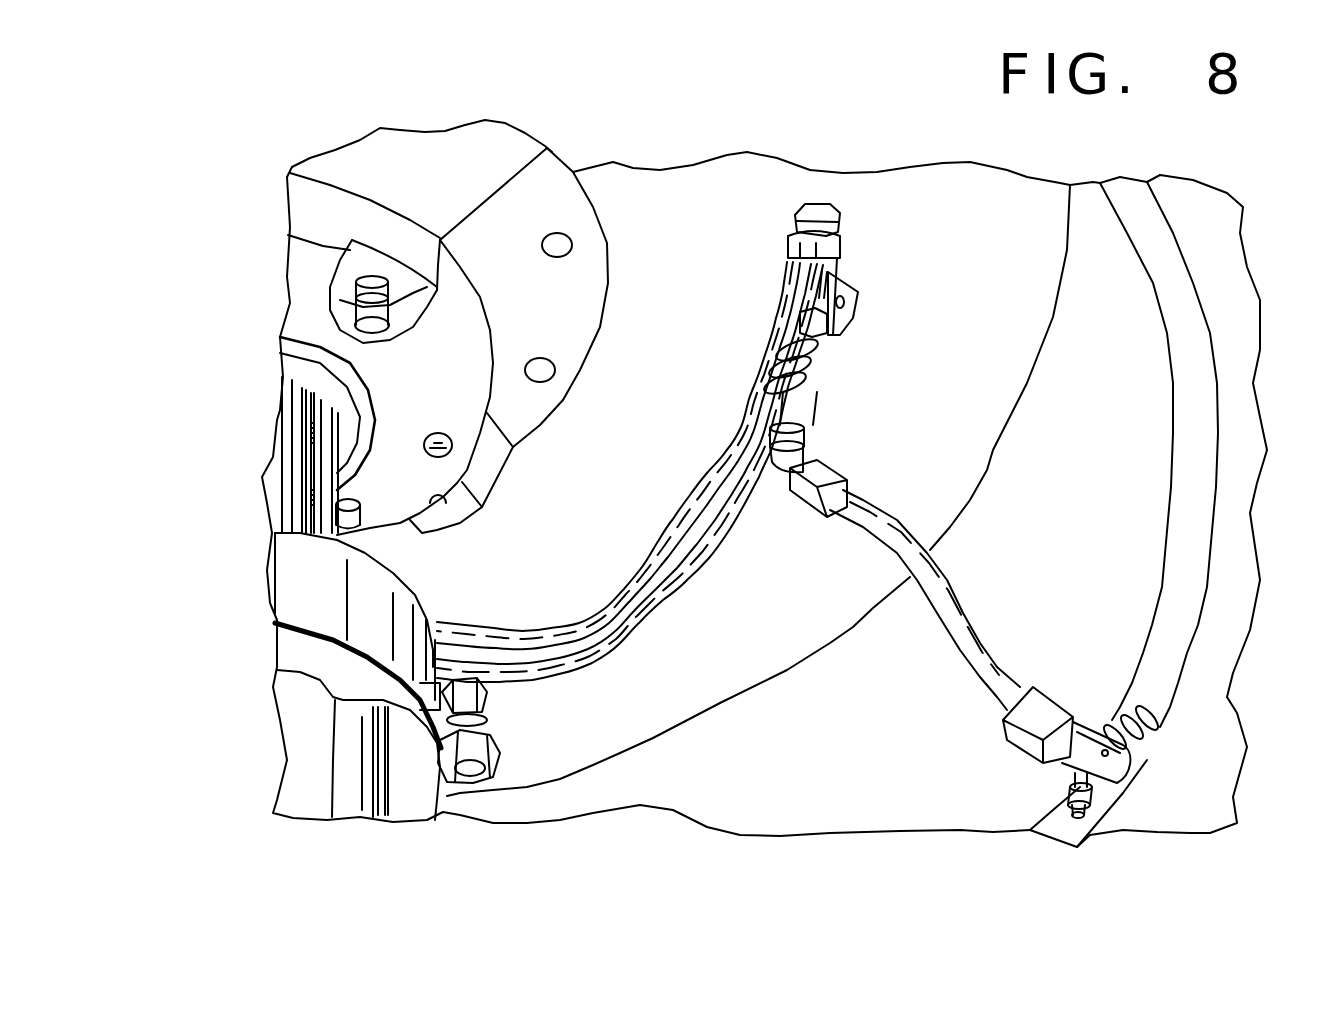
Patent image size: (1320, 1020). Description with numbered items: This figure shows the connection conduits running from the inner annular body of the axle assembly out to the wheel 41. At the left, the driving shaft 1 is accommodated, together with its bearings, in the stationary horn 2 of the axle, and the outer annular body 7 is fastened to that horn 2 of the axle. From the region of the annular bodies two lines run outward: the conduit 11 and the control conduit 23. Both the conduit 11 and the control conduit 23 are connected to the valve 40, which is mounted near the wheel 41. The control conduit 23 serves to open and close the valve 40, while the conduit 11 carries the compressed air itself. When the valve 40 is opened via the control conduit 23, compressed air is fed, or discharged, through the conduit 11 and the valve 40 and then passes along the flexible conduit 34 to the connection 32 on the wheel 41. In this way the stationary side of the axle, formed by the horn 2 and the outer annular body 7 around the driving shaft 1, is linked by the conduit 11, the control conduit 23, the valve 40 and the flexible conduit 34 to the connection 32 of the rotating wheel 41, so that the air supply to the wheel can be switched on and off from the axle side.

The driving shaft 1 is at (277, 455).
The horn of the axle 2 is at (297, 763).
The outer annular body 7 is at (290, 605).
The conduit 11 is at (694, 561).
The control conduit 23 is at (680, 531).
The connection 32 is at (1095, 737).
The flexible conduit 34 is at (950, 613).
The valve 40 is at (787, 278).
The wheel 41 is at (1168, 686).